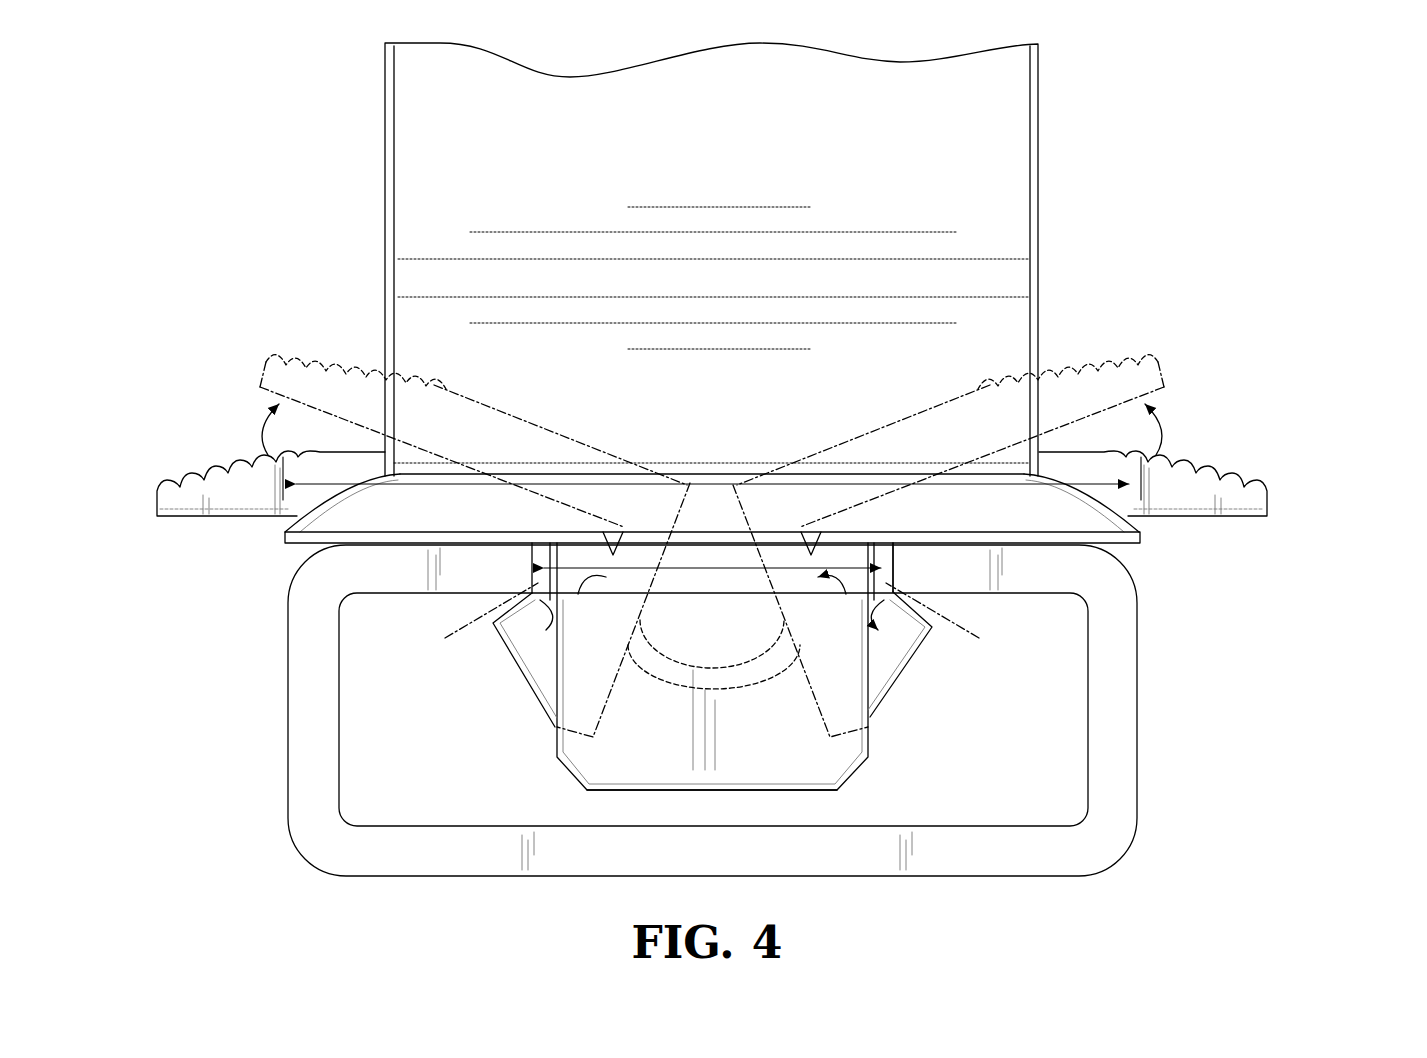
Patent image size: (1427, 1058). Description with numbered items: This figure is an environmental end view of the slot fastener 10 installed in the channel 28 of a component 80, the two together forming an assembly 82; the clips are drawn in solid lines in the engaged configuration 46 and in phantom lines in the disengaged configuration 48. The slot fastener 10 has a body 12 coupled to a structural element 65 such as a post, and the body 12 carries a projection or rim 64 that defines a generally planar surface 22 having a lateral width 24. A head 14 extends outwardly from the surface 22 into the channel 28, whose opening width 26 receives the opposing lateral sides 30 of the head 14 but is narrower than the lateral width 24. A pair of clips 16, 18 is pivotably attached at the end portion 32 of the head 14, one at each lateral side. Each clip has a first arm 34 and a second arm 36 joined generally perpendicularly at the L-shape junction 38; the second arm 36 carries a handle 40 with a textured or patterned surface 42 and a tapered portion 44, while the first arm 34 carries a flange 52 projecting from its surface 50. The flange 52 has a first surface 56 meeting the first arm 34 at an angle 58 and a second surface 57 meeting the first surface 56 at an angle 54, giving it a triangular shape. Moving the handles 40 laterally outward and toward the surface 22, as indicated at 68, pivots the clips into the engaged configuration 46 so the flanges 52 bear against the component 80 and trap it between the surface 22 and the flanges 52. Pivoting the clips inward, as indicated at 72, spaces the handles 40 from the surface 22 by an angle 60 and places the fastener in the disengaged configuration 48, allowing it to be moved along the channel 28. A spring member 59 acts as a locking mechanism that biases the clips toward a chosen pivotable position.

The slot fastener 10 is at (1224, 750).
The body 12 is at (310, 518).
The head 14 is at (565, 775).
The clip 16 is at (160, 500).
The clip 18 is at (1225, 483).
The surface 22 is at (300, 540).
The lateral width 24 is at (407, 487).
The opening width 26 is at (683, 570).
The channel 28 is at (1048, 655).
The opposing lateral sides 30 is at (553, 735).
The end portion 32 is at (790, 790).
The first arm 34 is at (620, 670).
The second arm 36 is at (520, 422).
The L-shape junction 38 is at (685, 428).
The handle 40 is at (237, 468).
The textured and/or patterned surface 42 is at (207, 472).
The tapered portion 44 is at (193, 386).
The engaged configuration 46 is at (1300, 477).
The disengaged configuration 48 is at (1132, 316).
The surface 50 is at (615, 526).
The flange 52 is at (517, 637).
The angle 54 is at (560, 623).
The first surface 56 is at (713, 619).
The second surface 57 is at (532, 697).
The angle 58 is at (605, 588).
The spring member 59 is at (693, 690).
The angle 60 is at (532, 525).
The projection or rim 64 is at (701, 475).
The structural element 65 is at (1054, 167).
The outward handle movement 68 is at (293, 450).
The inward pivoting 72 is at (262, 428).
The component 80 is at (1123, 700).
The assembly 82 is at (215, 143).